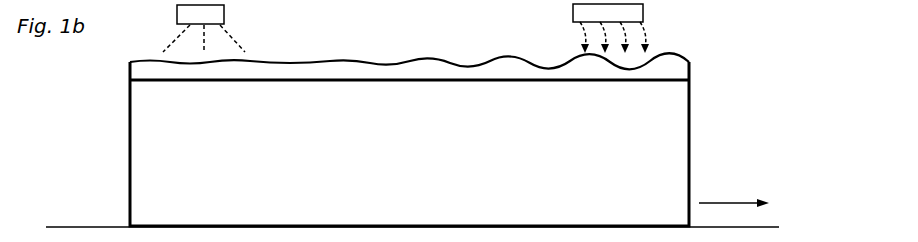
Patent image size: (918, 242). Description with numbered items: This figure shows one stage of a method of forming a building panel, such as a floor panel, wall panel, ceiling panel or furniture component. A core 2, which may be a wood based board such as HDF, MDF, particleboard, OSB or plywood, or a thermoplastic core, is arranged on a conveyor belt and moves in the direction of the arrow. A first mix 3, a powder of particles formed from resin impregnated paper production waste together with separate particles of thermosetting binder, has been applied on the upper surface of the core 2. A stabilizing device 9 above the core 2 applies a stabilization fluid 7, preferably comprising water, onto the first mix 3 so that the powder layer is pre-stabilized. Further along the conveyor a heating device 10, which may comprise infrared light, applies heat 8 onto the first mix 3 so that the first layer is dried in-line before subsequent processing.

The core 2 is at (680, 129).
The first mix 3 is at (673, 67).
The stabilization fluid 7 is at (230, 37).
The heat 8 is at (645, 28).
The stabilizing device 9 is at (183, 13).
The heating device 10 is at (580, 10).